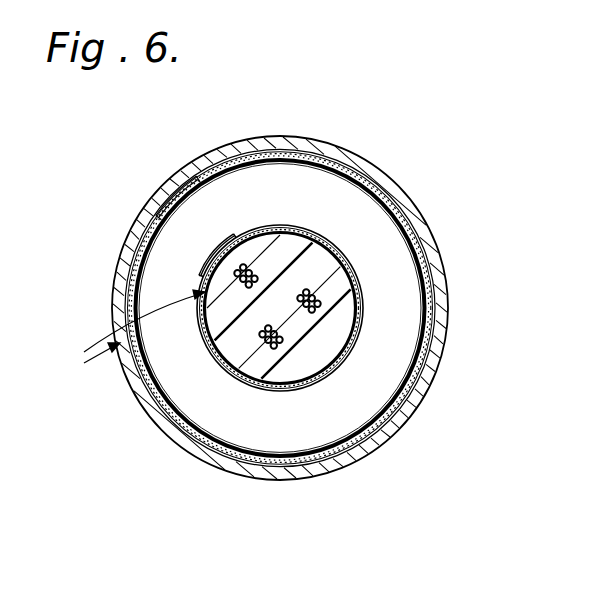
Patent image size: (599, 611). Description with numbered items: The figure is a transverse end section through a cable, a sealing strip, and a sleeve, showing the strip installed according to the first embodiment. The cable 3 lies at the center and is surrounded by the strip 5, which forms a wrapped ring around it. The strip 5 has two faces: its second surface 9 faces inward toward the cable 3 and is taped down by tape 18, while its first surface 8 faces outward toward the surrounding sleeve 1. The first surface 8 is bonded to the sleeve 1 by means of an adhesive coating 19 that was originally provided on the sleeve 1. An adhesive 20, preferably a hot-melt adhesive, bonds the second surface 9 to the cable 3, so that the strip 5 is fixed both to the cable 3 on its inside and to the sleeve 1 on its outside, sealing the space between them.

The sleeve 1 is at (390, 178).
The cable 3 is at (335, 288).
The strip 5 is at (132, 334).
The first surface 8 is at (183, 398).
The second surface 9 is at (243, 377).
The tape 18 is at (282, 393).
The adhesive coating 19 is at (213, 165).
The adhesive 20 is at (353, 321).